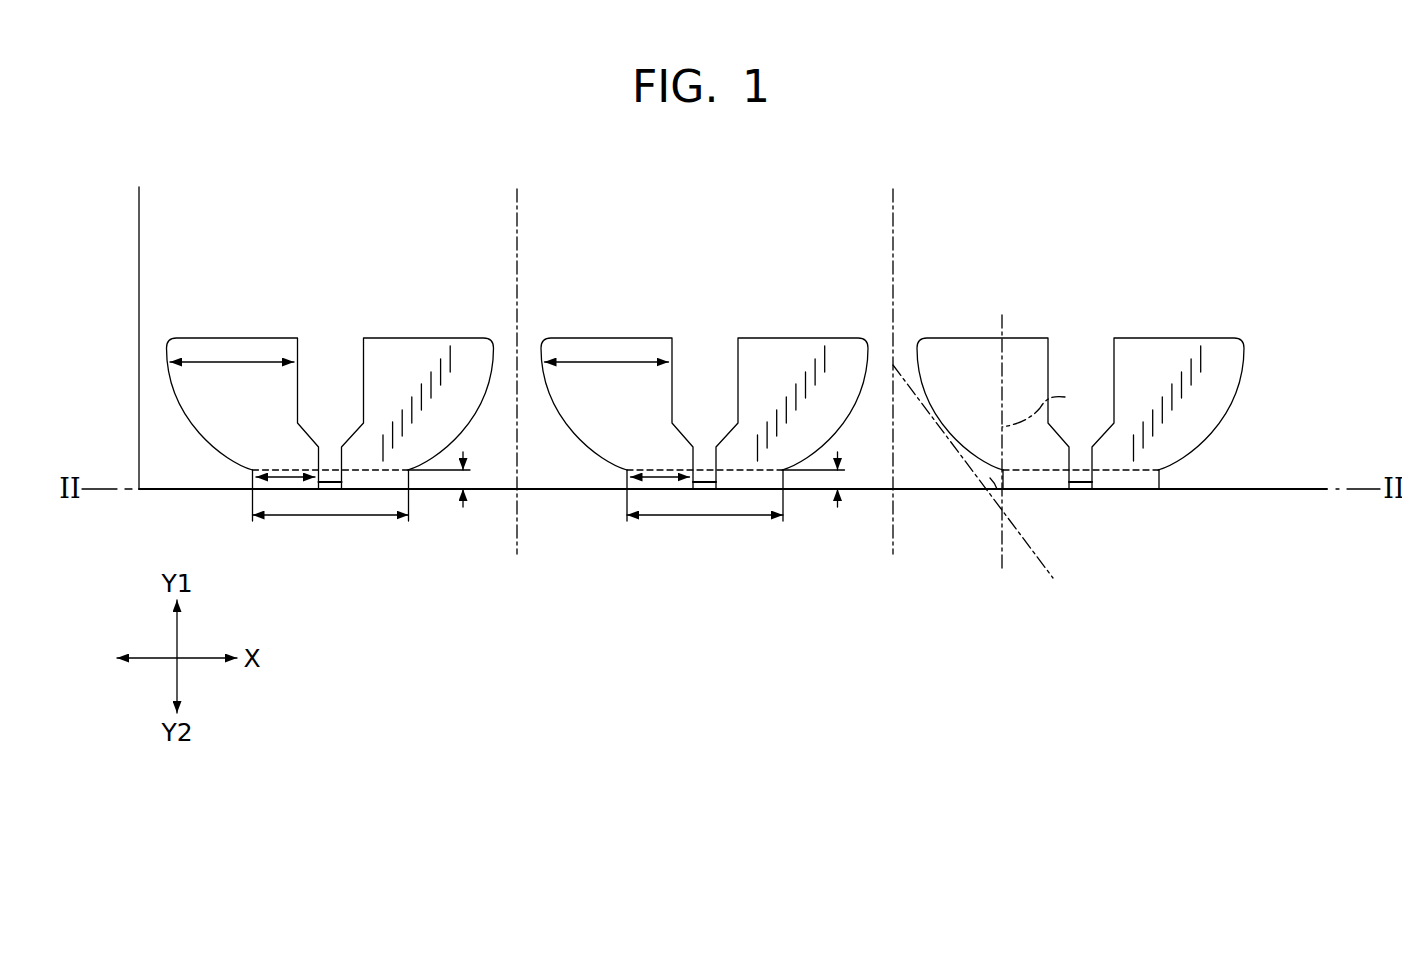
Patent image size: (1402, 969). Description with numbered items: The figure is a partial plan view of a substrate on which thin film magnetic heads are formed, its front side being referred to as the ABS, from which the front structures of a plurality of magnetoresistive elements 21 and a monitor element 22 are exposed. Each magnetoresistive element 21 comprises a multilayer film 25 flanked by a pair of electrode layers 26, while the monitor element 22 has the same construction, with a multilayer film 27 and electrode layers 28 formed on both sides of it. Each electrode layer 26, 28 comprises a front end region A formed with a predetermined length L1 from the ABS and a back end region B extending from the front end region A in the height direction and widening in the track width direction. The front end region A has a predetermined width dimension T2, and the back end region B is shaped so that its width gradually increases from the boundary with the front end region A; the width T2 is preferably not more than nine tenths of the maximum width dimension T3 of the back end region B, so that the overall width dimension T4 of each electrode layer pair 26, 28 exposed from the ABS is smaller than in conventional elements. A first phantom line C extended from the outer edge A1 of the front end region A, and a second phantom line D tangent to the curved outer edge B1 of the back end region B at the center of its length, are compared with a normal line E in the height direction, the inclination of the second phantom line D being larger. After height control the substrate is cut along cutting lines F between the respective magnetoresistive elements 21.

The magnetoresistive element 21 is at (893, 305).
The monitor element 22 is at (330, 305).
The multilayer film 25 is at (892, 477).
The electrode layer 26 is at (892, 381).
The multilayer film 27 is at (330, 435).
The electrode layer 28 is at (330, 381).
The front end region A is at (686, 509).
The outer edge of the front end region A1 is at (1003, 473).
The back end region B is at (693, 312).
The outer edge of the back end region B1 is at (917, 364).
The first phantom line C is at (1045, 407).
The second phantom line D is at (952, 445).
The normal line E is at (1003, 354).
The cutting line F is at (518, 231).
The width dimension of the front end region T2 is at (468, 448).
The maximum width dimension of the back end region T3 is at (419, 379).
The width dimension of the electrode layer pair exposed from the ABS T4 is at (518, 519).
The predetermined length of the front end region L1 is at (644, 479).
The element ABS is at (1289, 492).